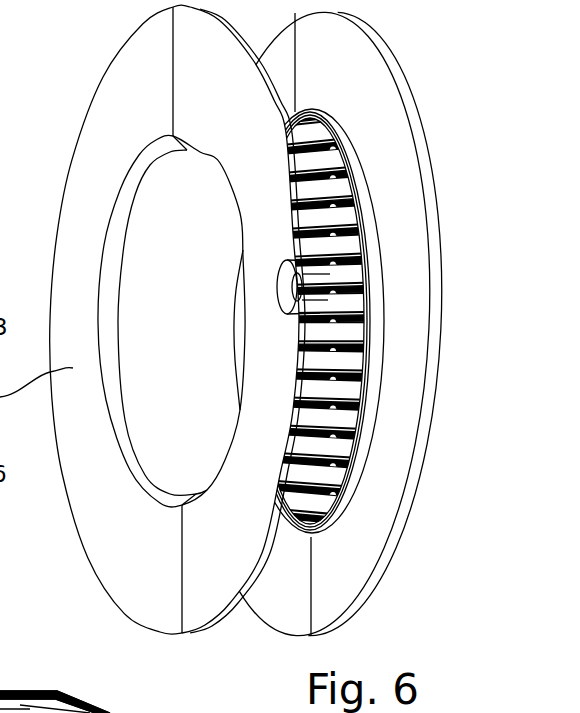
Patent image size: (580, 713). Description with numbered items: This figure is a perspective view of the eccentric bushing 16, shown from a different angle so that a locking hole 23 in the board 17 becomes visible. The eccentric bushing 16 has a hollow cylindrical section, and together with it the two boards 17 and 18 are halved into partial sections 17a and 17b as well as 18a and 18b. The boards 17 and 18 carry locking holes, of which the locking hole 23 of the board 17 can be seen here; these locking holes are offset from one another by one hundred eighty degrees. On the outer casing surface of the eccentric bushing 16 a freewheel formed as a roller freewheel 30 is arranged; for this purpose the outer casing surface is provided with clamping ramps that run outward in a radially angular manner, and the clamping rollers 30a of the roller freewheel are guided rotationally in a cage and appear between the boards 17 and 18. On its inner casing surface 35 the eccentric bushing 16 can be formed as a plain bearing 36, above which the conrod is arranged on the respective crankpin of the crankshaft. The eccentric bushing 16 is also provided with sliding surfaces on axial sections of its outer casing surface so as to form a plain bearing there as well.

The eccentric bushing 16 is at (184, 319).
The board 17 is at (185, 319).
The partial section of board 17a is at (134, 86).
The partial section of board 17b is at (250, 118).
The board 18 is at (342, 344).
The partial section of board 18a is at (278, 607).
The partial section of board 18b is at (387, 492).
The locking hole 23 is at (274, 298).
The connecting elements / vanes 30 is at (397, 317).
The clamping rollers 30a is at (350, 357).
The inner casing surface 35 is at (160, 283).
The plain bearing 36 is at (158, 217).